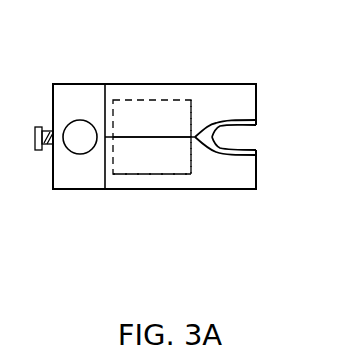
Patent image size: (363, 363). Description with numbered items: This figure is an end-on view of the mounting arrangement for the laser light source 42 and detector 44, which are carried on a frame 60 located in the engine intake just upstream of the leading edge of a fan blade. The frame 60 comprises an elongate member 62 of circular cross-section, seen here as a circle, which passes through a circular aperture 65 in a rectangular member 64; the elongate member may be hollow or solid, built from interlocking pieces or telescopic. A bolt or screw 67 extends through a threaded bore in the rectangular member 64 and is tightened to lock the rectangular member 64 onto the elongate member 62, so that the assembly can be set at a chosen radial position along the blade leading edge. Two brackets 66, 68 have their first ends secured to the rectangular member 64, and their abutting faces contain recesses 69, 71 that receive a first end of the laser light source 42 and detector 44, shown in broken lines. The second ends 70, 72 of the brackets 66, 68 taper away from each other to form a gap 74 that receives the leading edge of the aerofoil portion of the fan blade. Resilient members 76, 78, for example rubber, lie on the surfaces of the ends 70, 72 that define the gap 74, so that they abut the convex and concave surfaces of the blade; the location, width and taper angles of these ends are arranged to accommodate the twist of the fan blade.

The laser light source 42 is at (178, 83).
The detector 44 is at (168, 115).
The frame 60 is at (80, 142).
The elongate member 62 is at (78, 150).
The rectangular member 64 is at (82, 170).
The circular aperture 65 is at (97, 153).
The bracket 66 is at (145, 84).
The bolt or screw 67 is at (45, 126).
The bracket 68 is at (150, 182).
The recess 69 is at (122, 99).
The second end of bracket 70 is at (243, 103).
The recess 71 is at (173, 177).
The second end of bracket 72 is at (247, 172).
The gap 74 is at (240, 137).
The resilient member 76 is at (257, 120).
The resilient member 78 is at (258, 150).